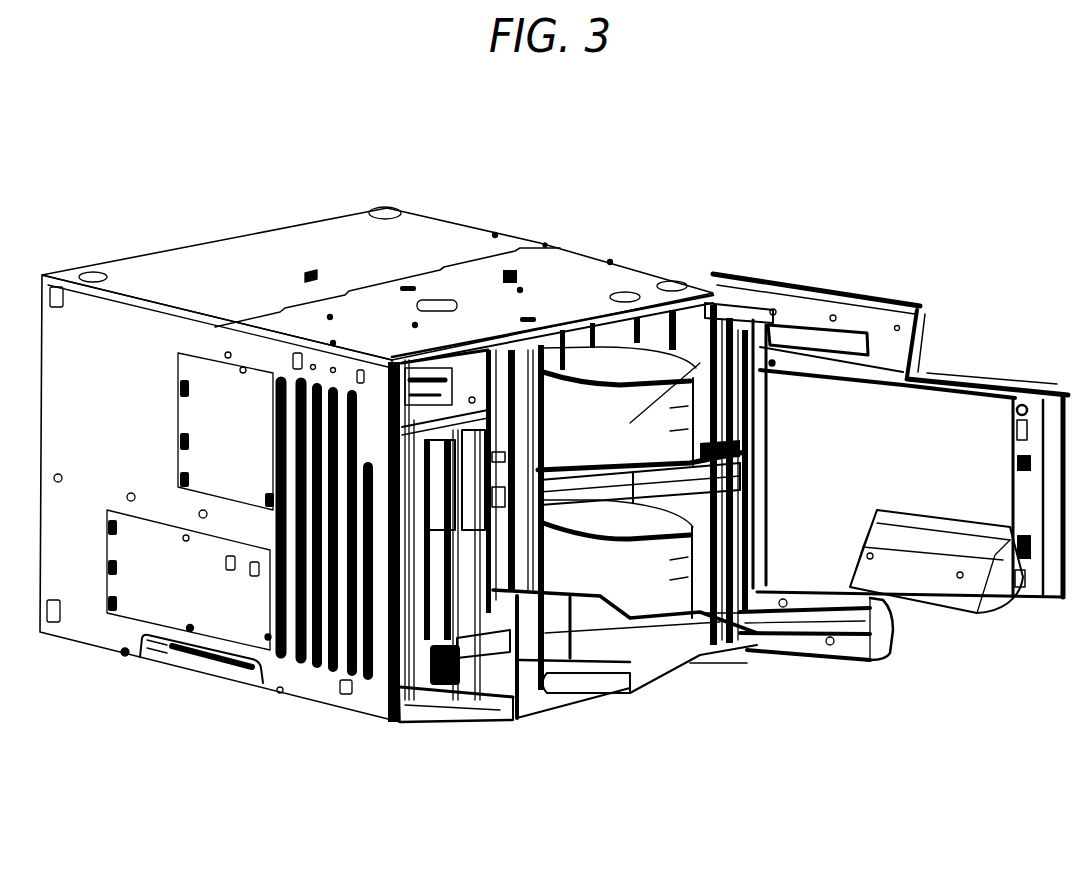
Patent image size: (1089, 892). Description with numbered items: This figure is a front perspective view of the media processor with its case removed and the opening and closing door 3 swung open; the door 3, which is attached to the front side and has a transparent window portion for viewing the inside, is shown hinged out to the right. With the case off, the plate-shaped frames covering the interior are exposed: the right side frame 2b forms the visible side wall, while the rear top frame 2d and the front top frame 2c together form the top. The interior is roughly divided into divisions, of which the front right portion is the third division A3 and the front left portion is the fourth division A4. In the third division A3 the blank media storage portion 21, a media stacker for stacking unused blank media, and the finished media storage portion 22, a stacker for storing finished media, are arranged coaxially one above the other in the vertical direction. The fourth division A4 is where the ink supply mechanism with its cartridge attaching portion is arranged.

The rear top frame 2d is at (298, 247).
The front top frame 2c is at (557, 283).
The right side frame 2b is at (306, 690).
The third division A3 is at (628, 366).
The finished media storage portion 22 is at (640, 585).
The blank media storage portion 21 is at (748, 285).
The opening and closing door 3 is at (973, 380).
The fourth division A4 is at (498, 729).